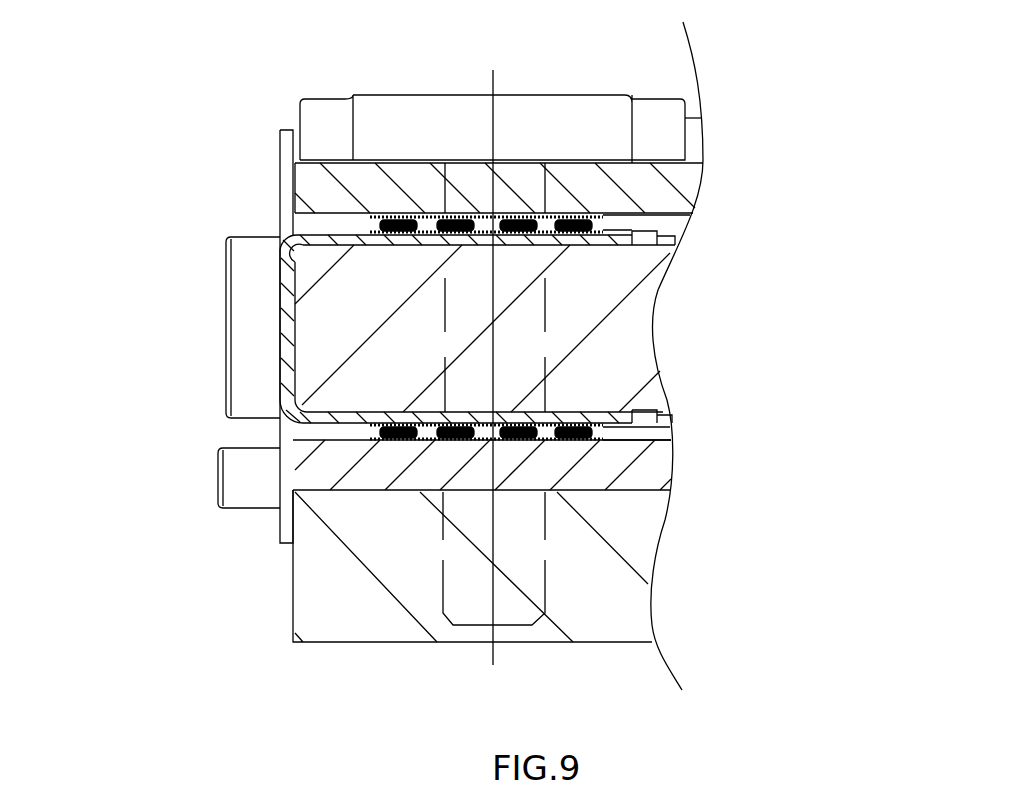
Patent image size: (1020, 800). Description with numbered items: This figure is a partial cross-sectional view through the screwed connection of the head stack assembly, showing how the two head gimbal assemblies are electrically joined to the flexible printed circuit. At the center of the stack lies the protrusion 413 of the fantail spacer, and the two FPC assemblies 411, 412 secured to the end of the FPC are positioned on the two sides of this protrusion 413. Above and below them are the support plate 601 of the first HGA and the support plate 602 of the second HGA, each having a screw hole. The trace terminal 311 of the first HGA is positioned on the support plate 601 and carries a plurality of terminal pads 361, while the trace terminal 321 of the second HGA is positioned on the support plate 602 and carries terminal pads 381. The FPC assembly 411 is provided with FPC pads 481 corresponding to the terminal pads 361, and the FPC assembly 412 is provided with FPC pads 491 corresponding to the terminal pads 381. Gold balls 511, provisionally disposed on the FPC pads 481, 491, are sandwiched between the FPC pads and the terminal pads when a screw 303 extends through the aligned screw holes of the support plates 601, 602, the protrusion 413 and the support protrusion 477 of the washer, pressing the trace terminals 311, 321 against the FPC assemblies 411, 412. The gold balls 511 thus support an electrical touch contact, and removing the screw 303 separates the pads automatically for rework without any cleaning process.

The screw 303 is at (427, 118).
The trace terminal 311 is at (365, 216).
The trace terminal 321 is at (603, 438).
The terminal pads 361 is at (657, 237).
The terminal pads 381 is at (657, 418).
The FPC assembly 411 is at (403, 240).
The FPC assembly 412 is at (345, 423).
The protrusion 413 is at (607, 357).
The support protrusion 477 is at (590, 600).
The FPC pads 481 is at (555, 236).
The FPC pads 491 is at (603, 428).
The gold balls 511 is at (572, 222).
The support plate 601 is at (653, 193).
The support plate 602 is at (640, 472).